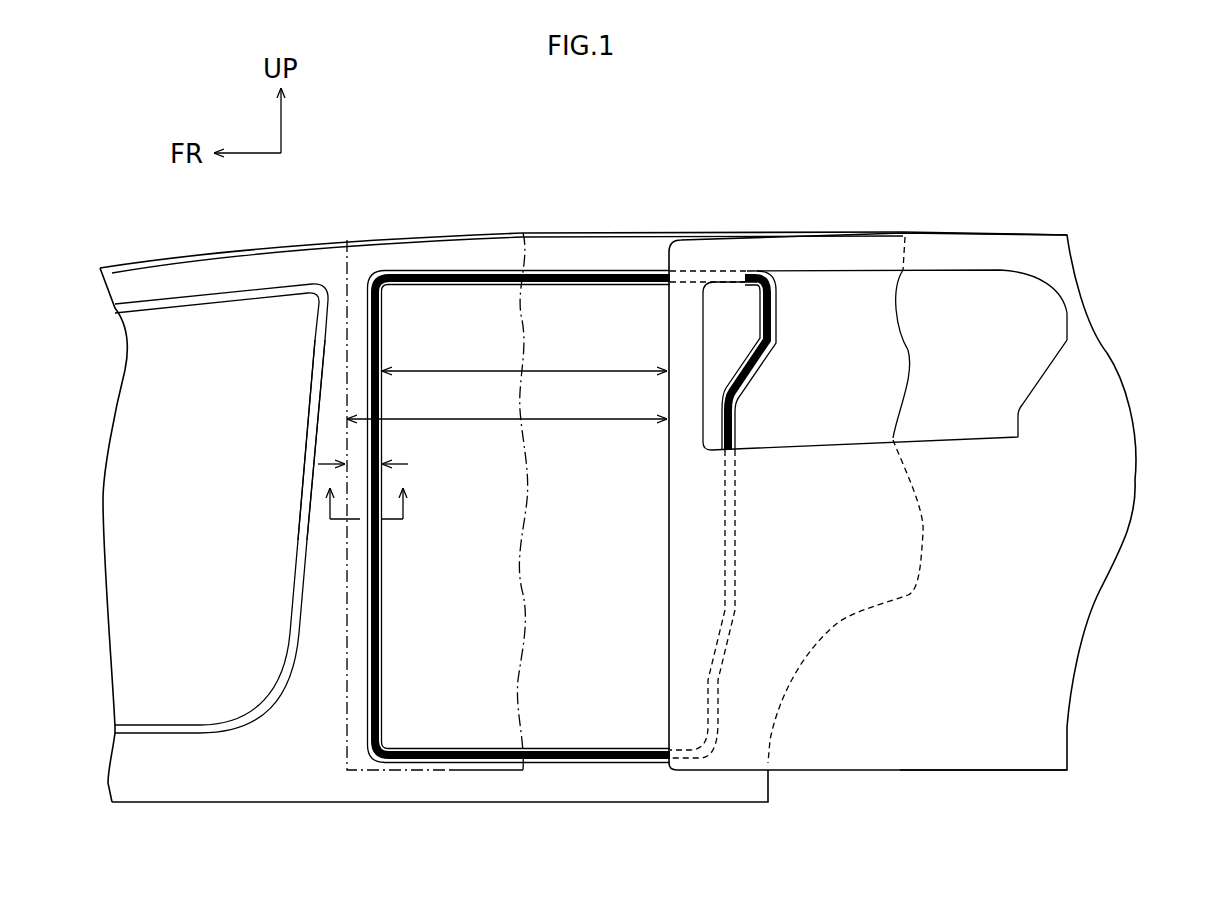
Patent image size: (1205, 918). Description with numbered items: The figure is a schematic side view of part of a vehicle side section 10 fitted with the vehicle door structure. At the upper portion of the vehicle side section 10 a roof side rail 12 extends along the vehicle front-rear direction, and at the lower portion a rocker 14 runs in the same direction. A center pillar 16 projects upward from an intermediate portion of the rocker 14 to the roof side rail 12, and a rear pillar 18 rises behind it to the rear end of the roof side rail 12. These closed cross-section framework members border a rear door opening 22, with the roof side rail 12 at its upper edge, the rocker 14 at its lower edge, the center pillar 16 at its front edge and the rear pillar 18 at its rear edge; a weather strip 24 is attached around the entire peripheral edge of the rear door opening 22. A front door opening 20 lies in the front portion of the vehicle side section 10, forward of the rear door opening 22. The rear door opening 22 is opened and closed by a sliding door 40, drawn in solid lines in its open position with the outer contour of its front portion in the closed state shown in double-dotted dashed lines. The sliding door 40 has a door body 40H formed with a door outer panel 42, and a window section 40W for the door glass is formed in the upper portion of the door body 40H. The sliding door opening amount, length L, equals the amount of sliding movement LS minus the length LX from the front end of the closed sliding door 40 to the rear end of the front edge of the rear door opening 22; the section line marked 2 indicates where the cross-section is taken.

The vehicle side section 10 is at (152, 222).
The roof side rail 12 is at (410, 252).
The rocker 14 is at (398, 790).
The center pillar 16 is at (330, 422).
The rear pillar 18 is at (793, 315).
The front door opening 20 is at (223, 298).
The rear door opening 22 is at (533, 287).
The weather strip 24 is at (385, 320).
The sliding door 40 is at (848, 747).
The window section 40W is at (860, 428).
The door body 40H is at (1015, 588).
The door outer panel 42 is at (920, 705).
The section line II-II 2 is at (330, 511).
The length L is at (548, 368).
The amount of sliding movement LS is at (562, 417).
The length LX is at (360, 460).